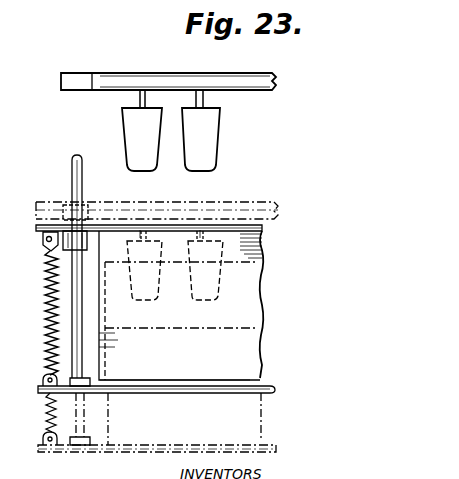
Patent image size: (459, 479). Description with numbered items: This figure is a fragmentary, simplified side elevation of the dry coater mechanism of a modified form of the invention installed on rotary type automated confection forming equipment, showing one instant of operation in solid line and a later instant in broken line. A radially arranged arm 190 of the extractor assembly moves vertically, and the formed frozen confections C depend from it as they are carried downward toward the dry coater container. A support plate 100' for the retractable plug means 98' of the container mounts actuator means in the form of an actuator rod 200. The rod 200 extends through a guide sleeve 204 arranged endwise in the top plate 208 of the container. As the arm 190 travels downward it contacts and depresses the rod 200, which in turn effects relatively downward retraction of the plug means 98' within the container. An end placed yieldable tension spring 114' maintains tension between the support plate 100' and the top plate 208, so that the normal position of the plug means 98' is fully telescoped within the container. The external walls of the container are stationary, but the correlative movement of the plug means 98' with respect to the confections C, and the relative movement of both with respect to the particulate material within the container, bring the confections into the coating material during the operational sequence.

The arm 190 is at (126, 74).
The stem S is at (140, 100).
The confections C is at (183, 150).
The actuator rod 200 is at (72, 165).
The top plate 208 is at (56, 222).
The guide sleeve 204 is at (47, 254).
The tension spring 114' is at (29, 348).
The support plate 100' is at (146, 352).
The retractable plug means 98' is at (175, 406).